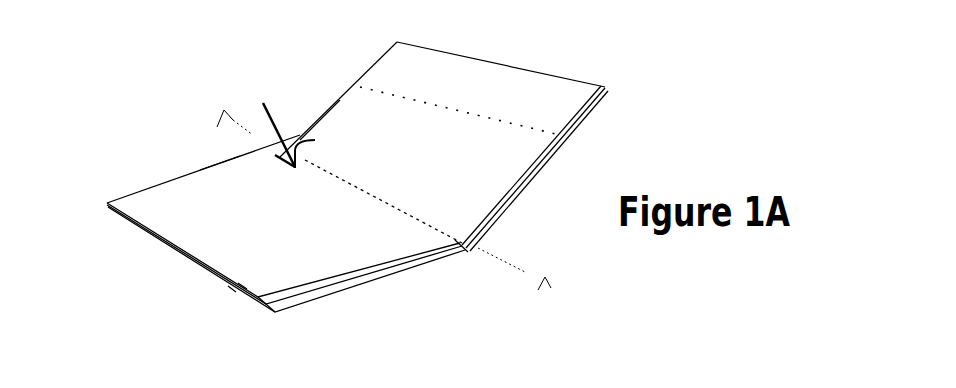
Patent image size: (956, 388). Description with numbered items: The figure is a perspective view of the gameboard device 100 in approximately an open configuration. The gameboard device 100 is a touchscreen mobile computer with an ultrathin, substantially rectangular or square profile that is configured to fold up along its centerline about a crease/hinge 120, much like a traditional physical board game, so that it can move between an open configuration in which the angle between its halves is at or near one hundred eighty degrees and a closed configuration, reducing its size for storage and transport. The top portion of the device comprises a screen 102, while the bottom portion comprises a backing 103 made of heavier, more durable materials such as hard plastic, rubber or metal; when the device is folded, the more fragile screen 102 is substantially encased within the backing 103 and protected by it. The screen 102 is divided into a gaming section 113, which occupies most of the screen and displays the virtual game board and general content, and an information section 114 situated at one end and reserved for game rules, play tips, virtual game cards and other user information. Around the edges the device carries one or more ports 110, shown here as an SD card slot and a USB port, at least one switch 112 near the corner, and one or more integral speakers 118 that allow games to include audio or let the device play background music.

The gameboard device 100 is at (358, 194).
The screen 102 is at (343, 128).
The backing 103 is at (560, 190).
The ports 110 is at (240, 283).
The switch 112 is at (258, 300).
The gaming section 113 is at (310, 240).
The information section 114 is at (487, 95).
The integral speakers 118 is at (217, 165).
The crease/hinge 120 is at (462, 245).